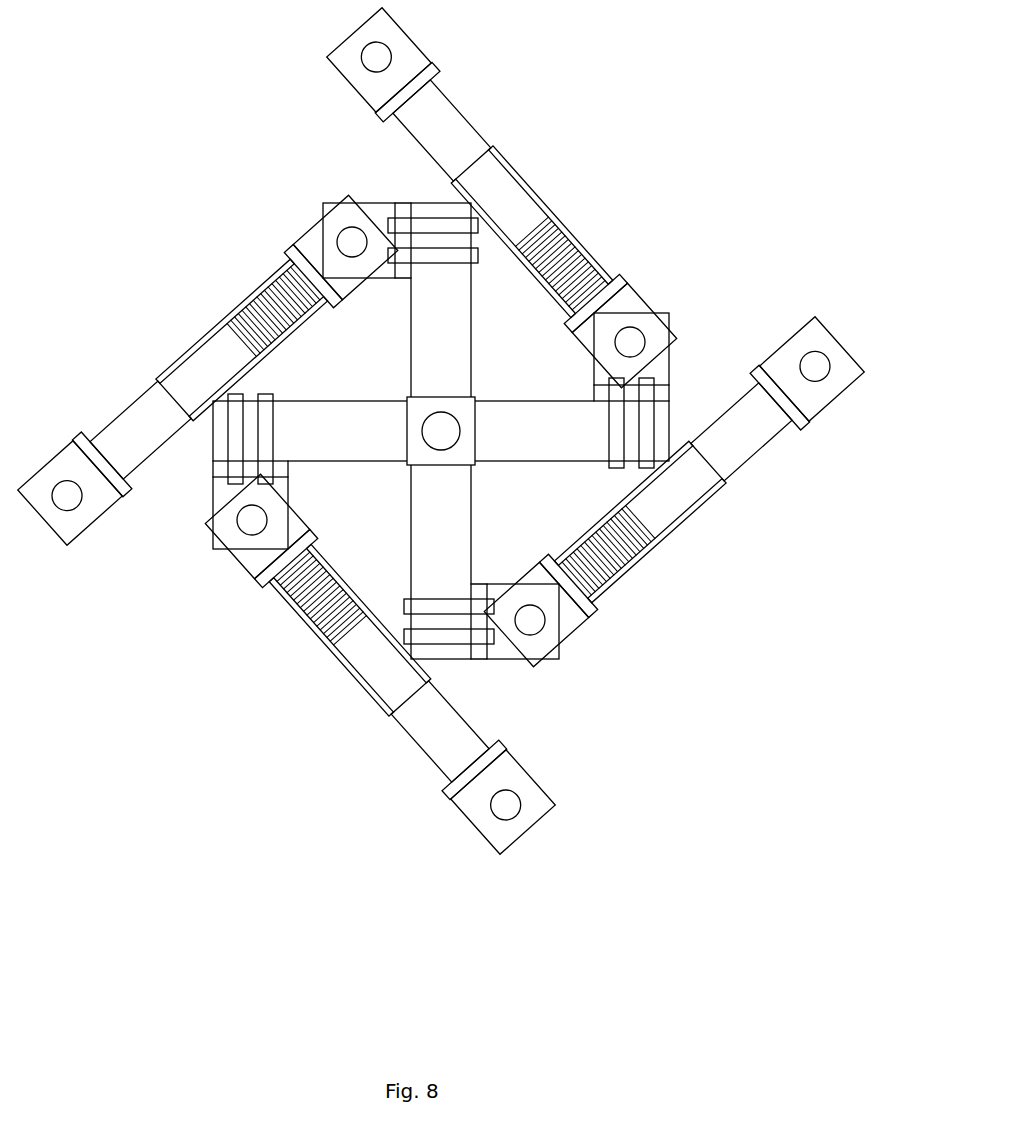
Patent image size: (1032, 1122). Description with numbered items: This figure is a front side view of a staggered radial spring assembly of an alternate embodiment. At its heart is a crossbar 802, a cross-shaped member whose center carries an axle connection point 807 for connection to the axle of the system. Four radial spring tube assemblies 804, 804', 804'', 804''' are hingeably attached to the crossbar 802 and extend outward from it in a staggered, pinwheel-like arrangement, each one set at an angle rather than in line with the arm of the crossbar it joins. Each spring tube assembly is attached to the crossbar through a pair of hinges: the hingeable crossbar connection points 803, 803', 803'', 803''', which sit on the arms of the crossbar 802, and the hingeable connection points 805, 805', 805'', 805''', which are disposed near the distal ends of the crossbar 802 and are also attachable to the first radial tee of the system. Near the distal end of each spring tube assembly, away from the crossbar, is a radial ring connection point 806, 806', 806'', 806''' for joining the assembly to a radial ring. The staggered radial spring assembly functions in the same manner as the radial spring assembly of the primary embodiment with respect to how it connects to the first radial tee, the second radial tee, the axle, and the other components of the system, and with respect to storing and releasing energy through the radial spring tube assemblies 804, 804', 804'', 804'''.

The crossbar 802 is at (443, 352).
The hingeable crossbar connection point 803 is at (732, 364).
The hingeable crossbar connection point 803' is at (544, 703).
The hingeable crossbar connection point 803'' is at (165, 502).
The hingeable crossbar connection point 803''' is at (375, 177).
The radial spring tube assembly 804 is at (530, 223).
The radial spring tube assembly 804' is at (647, 520).
The radial spring tube assembly 804'' is at (340, 632).
The radial spring tube assembly 804''' is at (240, 341).
The hingeable connection point 805 is at (707, 303).
The hingeable connection point 805' is at (618, 658).
The hingeable connection point 805'' is at (223, 564).
The hingeable connection point 805''' is at (294, 180).
The radial ring connection point 806 is at (320, 62).
The radial ring connection point 806' is at (843, 374).
The radial ring connection point 806'' is at (444, 833).
The radial ring connection point 806''' is at (74, 455).
The axle connection point 807 is at (443, 428).